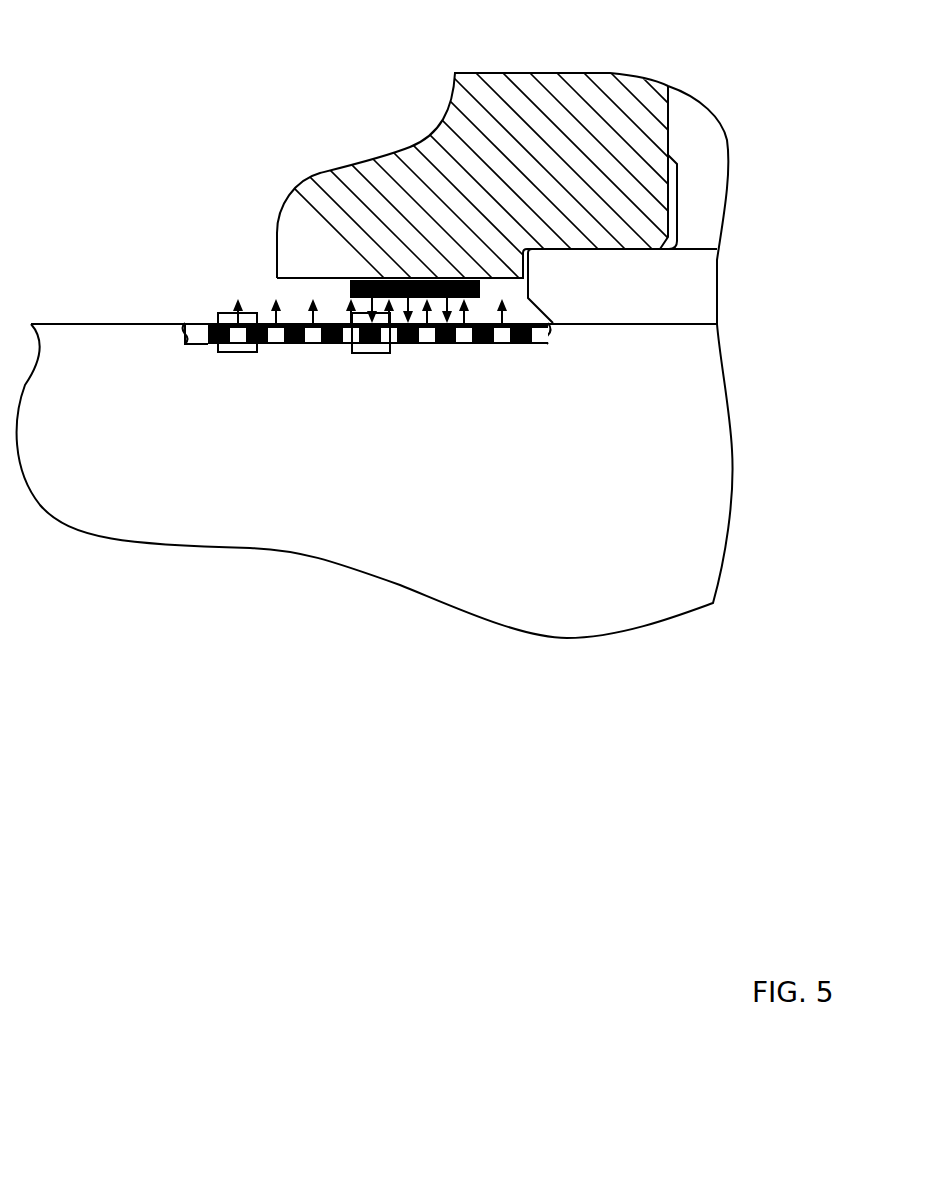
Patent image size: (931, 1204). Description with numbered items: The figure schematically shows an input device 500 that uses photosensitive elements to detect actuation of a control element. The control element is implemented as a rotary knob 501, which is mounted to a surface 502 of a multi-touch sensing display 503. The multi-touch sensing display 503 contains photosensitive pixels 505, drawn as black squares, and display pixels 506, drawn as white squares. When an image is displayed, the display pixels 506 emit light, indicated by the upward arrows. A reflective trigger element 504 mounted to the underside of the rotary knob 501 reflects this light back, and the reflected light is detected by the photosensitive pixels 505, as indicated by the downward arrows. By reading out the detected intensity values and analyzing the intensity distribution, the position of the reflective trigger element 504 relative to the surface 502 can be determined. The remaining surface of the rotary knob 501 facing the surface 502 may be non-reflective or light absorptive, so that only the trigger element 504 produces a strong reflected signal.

The input device 500 is at (143, 182).
The rotary knob 501 is at (320, 172).
The surface 502 is at (58, 322).
The multi-touch sensing display 503 is at (110, 527).
The reflective trigger element 504 is at (415, 279).
The photosensitive pixels 505 is at (371, 353).
The display pixels 506 is at (238, 352).